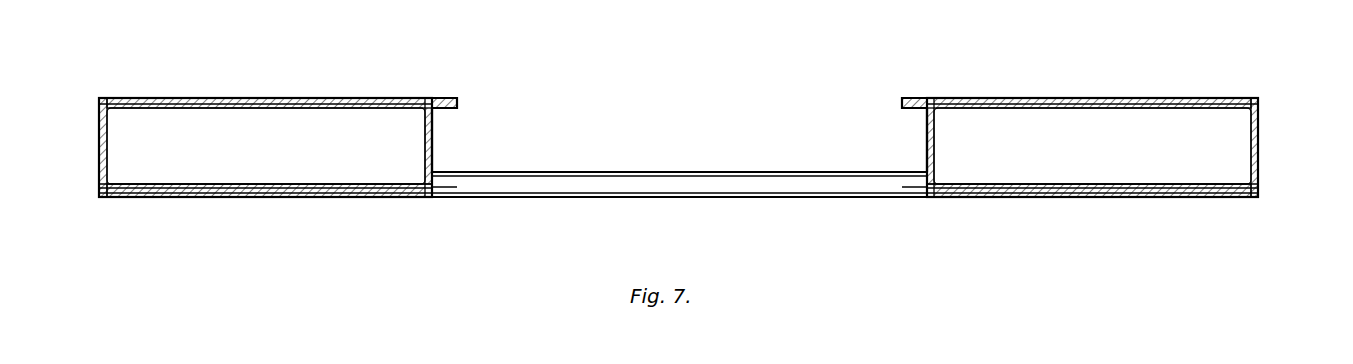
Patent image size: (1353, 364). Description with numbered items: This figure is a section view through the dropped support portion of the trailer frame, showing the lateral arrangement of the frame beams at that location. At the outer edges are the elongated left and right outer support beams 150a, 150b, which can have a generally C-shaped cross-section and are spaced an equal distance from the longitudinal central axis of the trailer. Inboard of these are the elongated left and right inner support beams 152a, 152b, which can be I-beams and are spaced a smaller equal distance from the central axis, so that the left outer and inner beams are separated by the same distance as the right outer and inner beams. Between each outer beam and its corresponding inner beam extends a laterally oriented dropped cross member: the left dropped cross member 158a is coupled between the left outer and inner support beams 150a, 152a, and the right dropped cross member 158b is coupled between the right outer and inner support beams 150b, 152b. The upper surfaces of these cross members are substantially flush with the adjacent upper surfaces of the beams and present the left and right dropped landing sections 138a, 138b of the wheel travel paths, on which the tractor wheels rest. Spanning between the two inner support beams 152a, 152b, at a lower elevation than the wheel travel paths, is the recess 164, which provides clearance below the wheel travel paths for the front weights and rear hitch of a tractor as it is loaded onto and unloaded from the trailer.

The left dropped landing section 138a is at (276, 99).
The right dropped landing section 138b is at (1095, 99).
The left outer support beam 150a is at (107, 150).
The right outer support beam 150b is at (1258, 147).
The left inner support beam 152a is at (432, 143).
The right inner support beam 152b is at (934, 143).
The left dropped cross member 158a is at (287, 170).
The right dropped cross member 158b is at (1122, 170).
The rear declined recess 164 is at (733, 145).